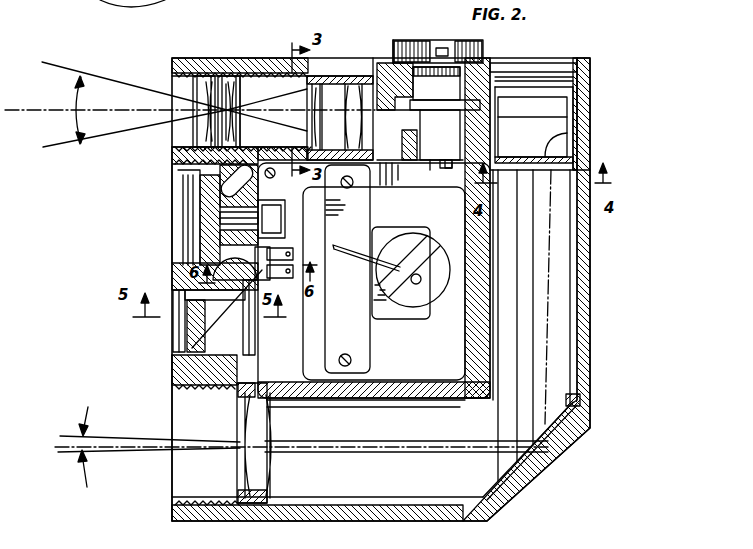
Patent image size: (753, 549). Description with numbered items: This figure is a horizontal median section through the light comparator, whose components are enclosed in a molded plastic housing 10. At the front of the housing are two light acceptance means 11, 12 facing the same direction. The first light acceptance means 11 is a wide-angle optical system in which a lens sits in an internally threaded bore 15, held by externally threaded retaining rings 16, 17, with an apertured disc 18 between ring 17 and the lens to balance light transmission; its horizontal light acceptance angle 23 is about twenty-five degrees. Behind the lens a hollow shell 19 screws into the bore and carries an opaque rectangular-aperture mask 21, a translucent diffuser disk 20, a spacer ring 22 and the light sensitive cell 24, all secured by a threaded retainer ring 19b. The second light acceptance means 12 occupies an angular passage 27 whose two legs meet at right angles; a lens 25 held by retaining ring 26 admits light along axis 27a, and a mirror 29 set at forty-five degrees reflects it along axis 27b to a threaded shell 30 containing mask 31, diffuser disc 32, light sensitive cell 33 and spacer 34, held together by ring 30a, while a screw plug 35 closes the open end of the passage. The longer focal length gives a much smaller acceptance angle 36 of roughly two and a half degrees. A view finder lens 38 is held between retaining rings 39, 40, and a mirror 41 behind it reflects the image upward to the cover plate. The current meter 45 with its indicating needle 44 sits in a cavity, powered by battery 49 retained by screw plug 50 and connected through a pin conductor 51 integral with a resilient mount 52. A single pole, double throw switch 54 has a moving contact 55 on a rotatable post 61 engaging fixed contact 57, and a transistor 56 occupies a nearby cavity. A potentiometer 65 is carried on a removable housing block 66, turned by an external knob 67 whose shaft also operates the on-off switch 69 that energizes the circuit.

The housing 10 is at (597, 338).
The first light acceptance means 11 is at (118, 10).
The second light acceptance means 12 is at (184, 480).
The internally threaded bore 15 is at (262, 80).
The retaining ring 16 is at (253, 73).
The retaining ring 17 is at (100, 0).
The disc 18 is at (214, 72).
The hollow shell 19 is at (348, 74).
The threaded retainer ring 19b is at (395, 33).
The diffuser disk 20 is at (343, 72).
The mask 21 is at (318, 80).
The spacer ring 22 is at (340, 118).
The horizontal light acceptance angle 23 is at (72, 126).
The light sensitive cell 24 is at (383, 182).
The lens 25 is at (262, 428).
The retaining ring 26 is at (240, 397).
The angular passage 27 is at (397, 497).
The axis 27a is at (447, 447).
The axis 27b is at (533, 278).
The mirror 29 is at (493, 480).
The threaded shell 30 is at (584, 151).
The ring 30a is at (584, 90).
The mask 31 is at (568, 184).
The diffuser disc 32 is at (584, 128).
The light sensitive cell 33 is at (557, 109).
The spacer 34 is at (584, 137).
The screw plug 35 is at (570, 72).
The horizontal light acceptance angle 36 is at (80, 446).
The lens 38 is at (174, 332).
The retaining ring 39 is at (172, 346).
The retaining ring 40 is at (188, 353).
The mirror 41 is at (228, 338).
The indicating needle 44 is at (356, 258).
The meter 45 is at (423, 346).
The battery 49 is at (258, 252).
The screw plug 50 is at (180, 196).
The pin conductor 51 is at (225, 218).
The resilient mount 52 is at (270, 203).
The switch 54 is at (262, 326).
The moving contact 55 is at (258, 235).
The transistor 56 is at (172, 170).
The fixed contact 57 is at (268, 250).
The rotatable post 61 is at (238, 282).
The potentiometer 65 is at (428, 128).
The housing block 66 is at (490, 70).
The knob 67 is at (424, 52).
The switch 69 is at (448, 170).